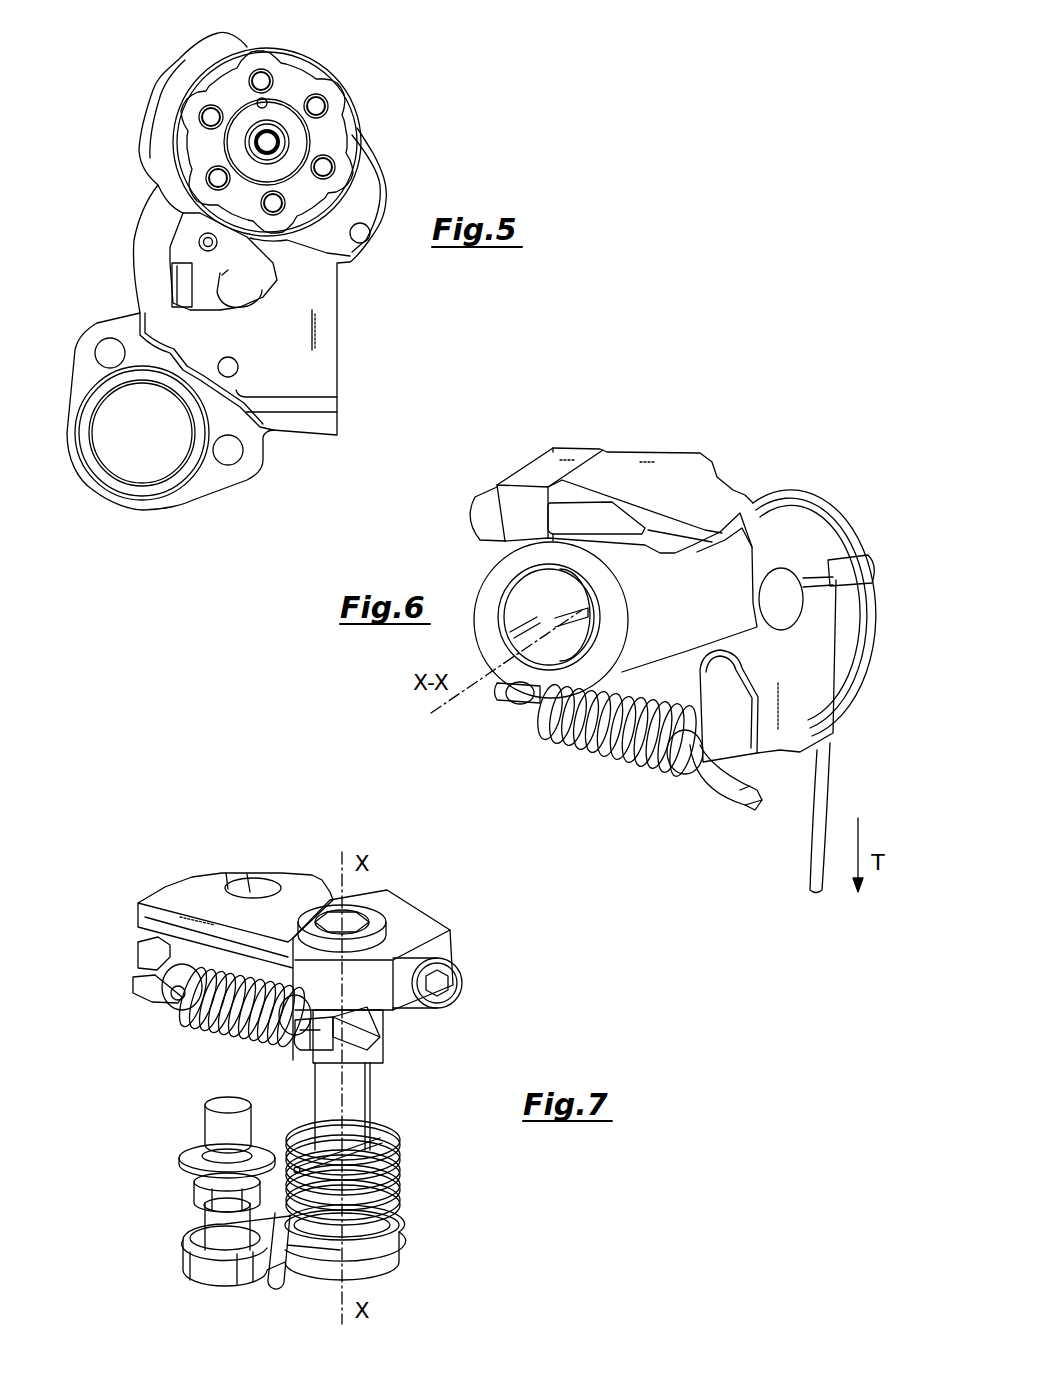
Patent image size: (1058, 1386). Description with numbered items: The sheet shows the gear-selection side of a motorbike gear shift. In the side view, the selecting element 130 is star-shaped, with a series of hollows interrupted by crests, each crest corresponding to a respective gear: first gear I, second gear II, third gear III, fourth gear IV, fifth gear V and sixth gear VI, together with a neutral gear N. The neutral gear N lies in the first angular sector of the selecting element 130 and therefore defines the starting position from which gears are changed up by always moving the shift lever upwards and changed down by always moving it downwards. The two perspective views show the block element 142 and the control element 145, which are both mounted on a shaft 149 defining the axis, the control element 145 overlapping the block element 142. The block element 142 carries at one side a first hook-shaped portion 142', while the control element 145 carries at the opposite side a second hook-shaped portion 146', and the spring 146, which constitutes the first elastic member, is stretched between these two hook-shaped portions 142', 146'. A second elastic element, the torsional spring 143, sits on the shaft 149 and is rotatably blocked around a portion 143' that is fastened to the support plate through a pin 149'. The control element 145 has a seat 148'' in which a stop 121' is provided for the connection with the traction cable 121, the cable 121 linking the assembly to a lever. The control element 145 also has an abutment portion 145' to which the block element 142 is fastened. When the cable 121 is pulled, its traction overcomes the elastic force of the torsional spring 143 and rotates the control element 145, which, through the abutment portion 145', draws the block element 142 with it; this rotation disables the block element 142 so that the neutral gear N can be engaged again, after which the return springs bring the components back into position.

In FIG. 5, the selecting element 130 is at (367, 96).
In FIG. 5, the neutral gear N is at (253, 63).
In FIG. 5, the first gear I is at (292, 73).
In FIG. 5, the second gear II is at (340, 127).
In FIG. 5, the third gear III is at (317, 200).
In FIG. 5, the fourth gear IV is at (240, 213).
In FIG. 5, the fifth gear V is at (193, 157).
In FIG. 5, the sixth gear VI is at (222, 88).
In FIG. 6, the cable 121 is at (865, 818).
In FIG. 6, the stop 121' is at (857, 613).
In FIG. 6, the block element 142 is at (655, 707).
In FIG. 7, the first hook-shaped portion 142' is at (403, 1036).
In FIG. 7, the torsional spring 143 is at (390, 1183).
In FIG. 7, the portion 143' is at (289, 1272).
In FIG. 6, the control element 145 is at (629, 476).
In FIG. 7, the control element 145 is at (300, 937).
In FIG. 6, the abutment portion 145' is at (595, 461).
In FIG. 6, the spring 146 is at (598, 752).
In FIG. 7, the spring 146 is at (224, 1024).
In FIG. 7, the second hook-shaped portion 146' is at (120, 950).
In FIG. 7, the seat 148'' is at (276, 855).
In FIG. 7, the shaft 149 is at (405, 1106).
In FIG. 7, the pin 149' is at (183, 1173).